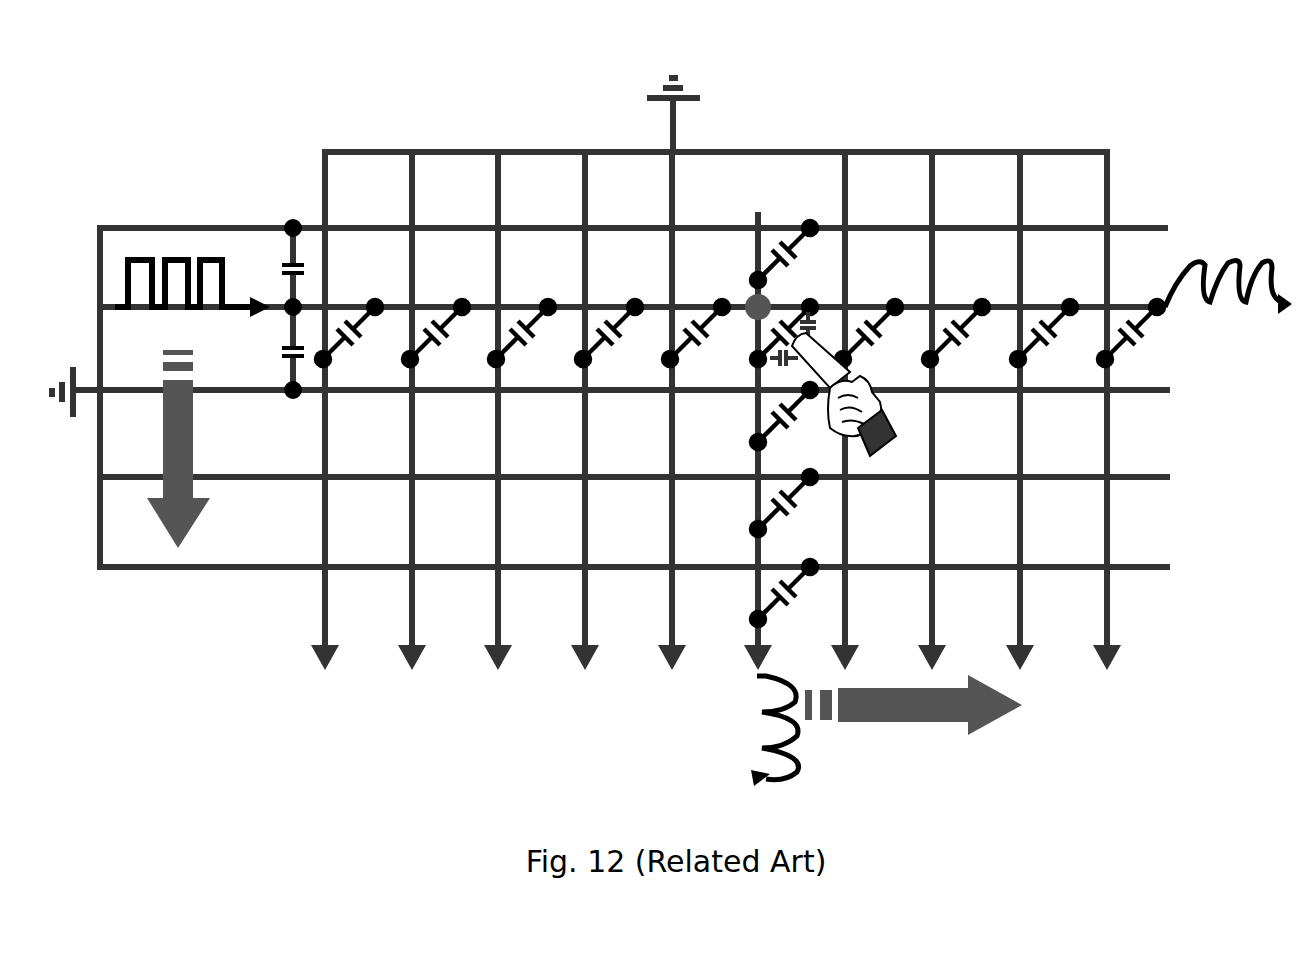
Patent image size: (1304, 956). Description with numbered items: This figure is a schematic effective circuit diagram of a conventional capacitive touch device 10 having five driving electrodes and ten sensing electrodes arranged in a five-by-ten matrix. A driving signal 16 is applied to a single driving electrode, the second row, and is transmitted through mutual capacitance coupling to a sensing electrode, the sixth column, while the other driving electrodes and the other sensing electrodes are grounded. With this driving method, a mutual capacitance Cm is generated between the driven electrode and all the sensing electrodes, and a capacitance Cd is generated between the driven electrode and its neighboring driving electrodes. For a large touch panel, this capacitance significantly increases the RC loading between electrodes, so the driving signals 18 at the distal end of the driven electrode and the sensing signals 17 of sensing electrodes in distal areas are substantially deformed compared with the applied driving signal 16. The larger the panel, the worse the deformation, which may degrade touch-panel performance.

The conventional capacitive touch device 10 is at (655, 26).
The driving signal 16 is at (173, 262).
The sensing signal 17 is at (798, 728).
The driving signal 18 is at (1237, 262).